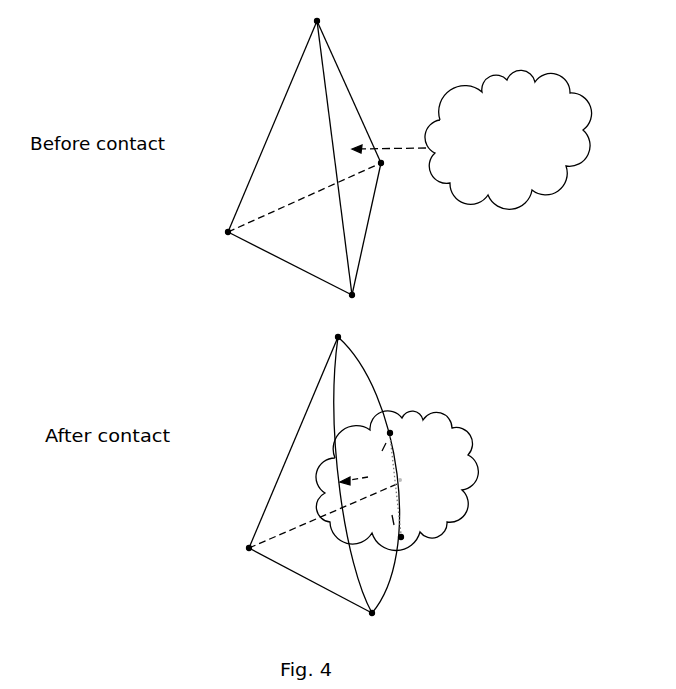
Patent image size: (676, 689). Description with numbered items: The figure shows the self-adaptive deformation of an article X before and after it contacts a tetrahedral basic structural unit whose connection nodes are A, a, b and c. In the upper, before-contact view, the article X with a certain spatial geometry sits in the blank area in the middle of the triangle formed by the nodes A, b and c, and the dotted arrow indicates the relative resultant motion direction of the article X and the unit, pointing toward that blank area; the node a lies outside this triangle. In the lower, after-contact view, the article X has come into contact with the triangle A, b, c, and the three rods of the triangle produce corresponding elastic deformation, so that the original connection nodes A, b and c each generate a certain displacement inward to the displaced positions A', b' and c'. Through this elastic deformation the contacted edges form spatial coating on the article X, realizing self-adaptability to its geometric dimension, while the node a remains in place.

The connection node A is at (304, 155).
The connection node a is at (300, 388).
The connection node b is at (366, 235).
The connection node c is at (391, 171).
The article X is at (454, 310).
The displaced connection node A' is at (367, 471).
The displaced connection node b' is at (385, 618).
The displaced connection node c' is at (403, 485).